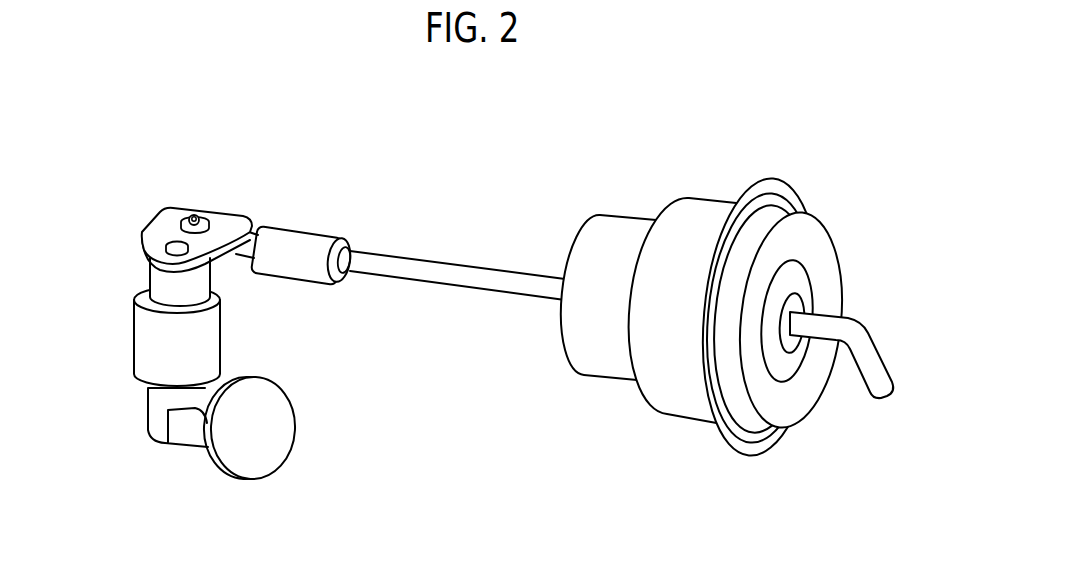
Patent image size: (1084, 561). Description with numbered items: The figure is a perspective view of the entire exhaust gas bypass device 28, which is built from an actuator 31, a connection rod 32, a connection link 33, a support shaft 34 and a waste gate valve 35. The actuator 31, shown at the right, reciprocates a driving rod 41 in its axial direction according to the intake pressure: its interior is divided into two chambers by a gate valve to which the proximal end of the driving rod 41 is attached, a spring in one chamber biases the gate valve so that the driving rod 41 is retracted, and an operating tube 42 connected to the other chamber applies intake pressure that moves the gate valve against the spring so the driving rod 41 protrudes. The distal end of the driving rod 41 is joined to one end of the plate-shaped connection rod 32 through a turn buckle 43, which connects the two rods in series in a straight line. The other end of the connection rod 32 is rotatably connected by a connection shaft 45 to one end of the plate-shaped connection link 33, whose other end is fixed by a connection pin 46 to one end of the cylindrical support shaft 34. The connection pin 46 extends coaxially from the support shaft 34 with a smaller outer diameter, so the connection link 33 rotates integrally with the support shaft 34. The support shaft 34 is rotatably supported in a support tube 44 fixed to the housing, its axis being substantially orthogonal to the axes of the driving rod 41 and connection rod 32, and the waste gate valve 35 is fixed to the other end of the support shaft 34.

The exhaust gas bypass device 28 is at (571, 135).
The actuator 31 is at (718, 190).
The connection rod 32 is at (238, 276).
The connection link 33 is at (151, 203).
The support shaft 34 is at (140, 275).
The waste gate valve 35 is at (306, 433).
The driving rod 41 is at (453, 268).
The operating tube 42 is at (867, 354).
The turn buckle 43 is at (298, 230).
The support tube 44 is at (153, 339).
The connection shaft 45 is at (193, 213).
The connection pin 46 is at (164, 240).